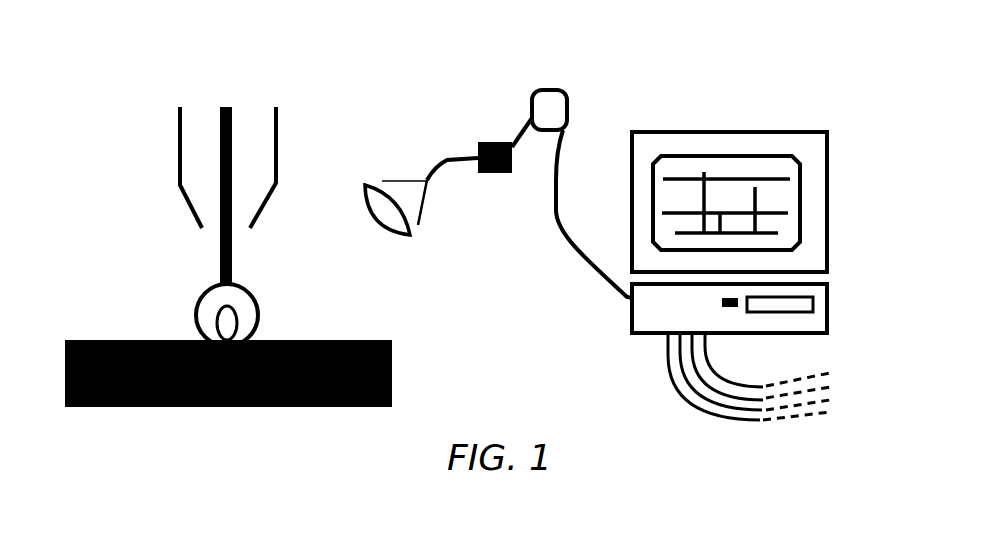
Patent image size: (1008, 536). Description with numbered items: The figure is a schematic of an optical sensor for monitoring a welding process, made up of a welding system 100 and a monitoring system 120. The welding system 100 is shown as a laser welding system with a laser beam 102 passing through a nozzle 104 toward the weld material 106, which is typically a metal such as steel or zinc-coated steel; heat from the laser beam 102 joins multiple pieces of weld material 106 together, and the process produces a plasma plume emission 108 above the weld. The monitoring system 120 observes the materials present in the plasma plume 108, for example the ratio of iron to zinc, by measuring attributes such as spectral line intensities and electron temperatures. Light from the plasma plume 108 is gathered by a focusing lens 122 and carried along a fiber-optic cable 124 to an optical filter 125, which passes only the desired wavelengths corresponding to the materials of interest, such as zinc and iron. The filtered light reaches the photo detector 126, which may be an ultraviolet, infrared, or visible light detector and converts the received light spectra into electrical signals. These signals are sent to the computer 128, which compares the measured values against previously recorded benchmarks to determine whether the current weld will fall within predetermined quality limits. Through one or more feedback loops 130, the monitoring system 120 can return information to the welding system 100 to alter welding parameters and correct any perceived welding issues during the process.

The welding system 100 is at (142, 57).
The laser beam 102 is at (231, 107).
The nozzle 104 is at (278, 140).
The weld material 106 is at (108, 340).
The plasma plume emission 108 is at (183, 282).
The monitoring system 120 is at (712, 87).
The focusing lens 122 is at (367, 185).
The fiber-optic cable 124 is at (448, 158).
The optical filter 125 is at (485, 173).
The photo detector 126 is at (563, 90).
The computer 128 is at (828, 210).
The feedback loops 130 is at (672, 362).